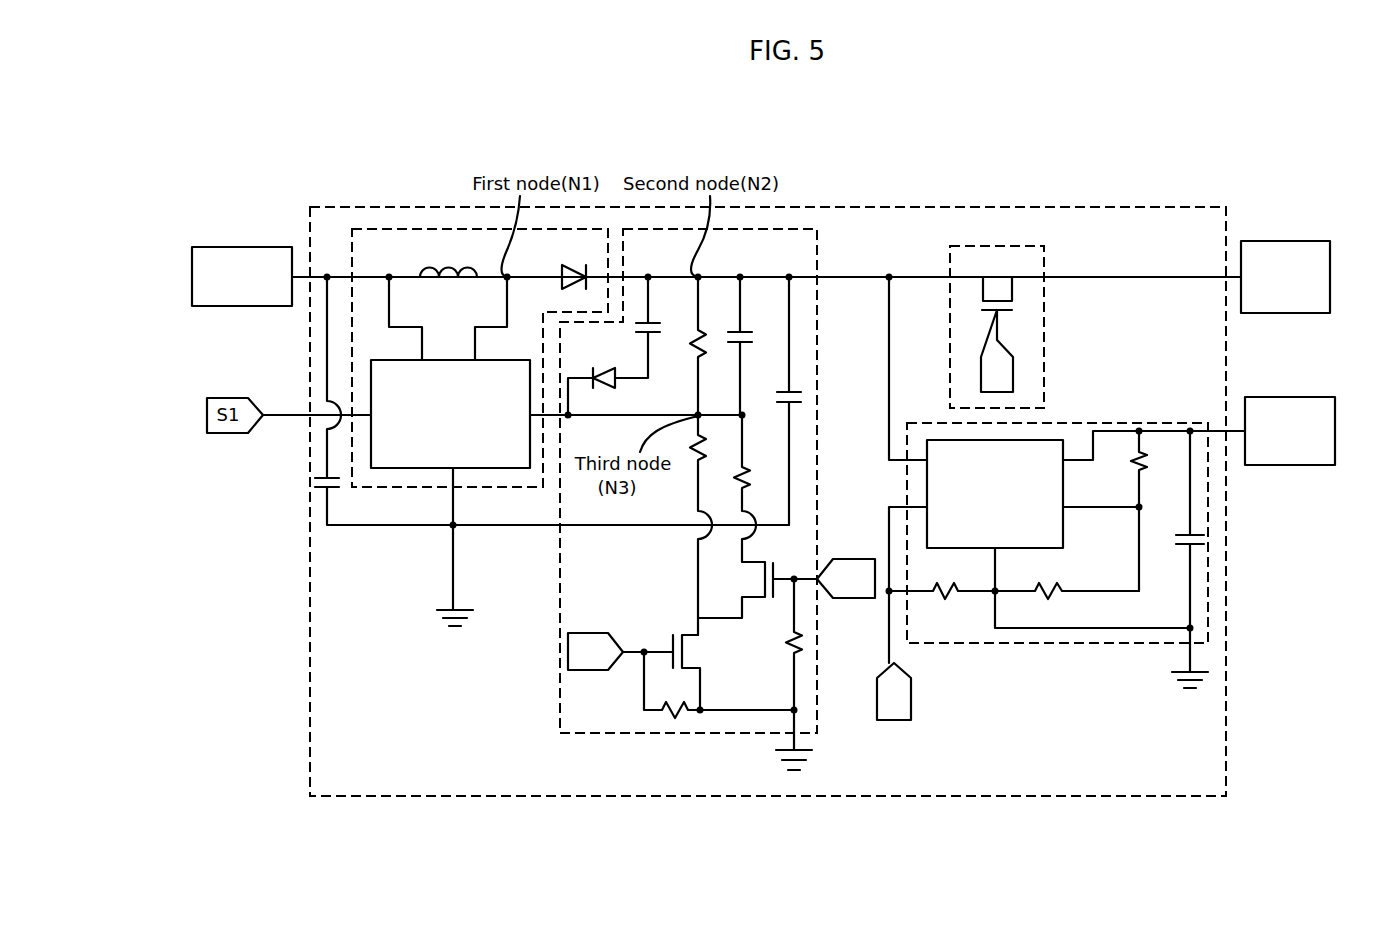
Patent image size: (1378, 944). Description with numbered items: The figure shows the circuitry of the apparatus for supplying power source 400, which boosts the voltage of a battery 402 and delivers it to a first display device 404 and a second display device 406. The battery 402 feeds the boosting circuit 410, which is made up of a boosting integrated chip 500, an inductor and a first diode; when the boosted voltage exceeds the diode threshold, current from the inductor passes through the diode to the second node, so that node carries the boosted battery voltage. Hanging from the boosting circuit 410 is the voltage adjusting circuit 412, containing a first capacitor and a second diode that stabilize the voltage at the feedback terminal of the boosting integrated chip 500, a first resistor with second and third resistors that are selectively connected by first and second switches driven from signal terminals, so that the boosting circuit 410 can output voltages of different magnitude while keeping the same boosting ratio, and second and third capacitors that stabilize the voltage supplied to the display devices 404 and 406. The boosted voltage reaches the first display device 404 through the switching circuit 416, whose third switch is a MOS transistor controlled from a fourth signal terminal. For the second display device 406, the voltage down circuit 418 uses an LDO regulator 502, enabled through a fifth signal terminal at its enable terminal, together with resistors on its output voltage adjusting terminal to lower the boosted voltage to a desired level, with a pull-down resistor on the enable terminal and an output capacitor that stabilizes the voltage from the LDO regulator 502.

The apparatus for supplying power source 400 is at (1227, 717).
The battery 402 is at (243, 247).
The first display device 404 is at (1272, 241).
The second display device 406 is at (1298, 465).
The boosting circuit 410 is at (500, 382).
The voltage adjusting circuit 412 is at (779, 229).
The switching circuit 416 is at (995, 246).
The voltage down circuit 418 is at (1061, 467).
The boosting integrated chip 500 is at (390, 468).
The LDO regulator 502 is at (943, 440).